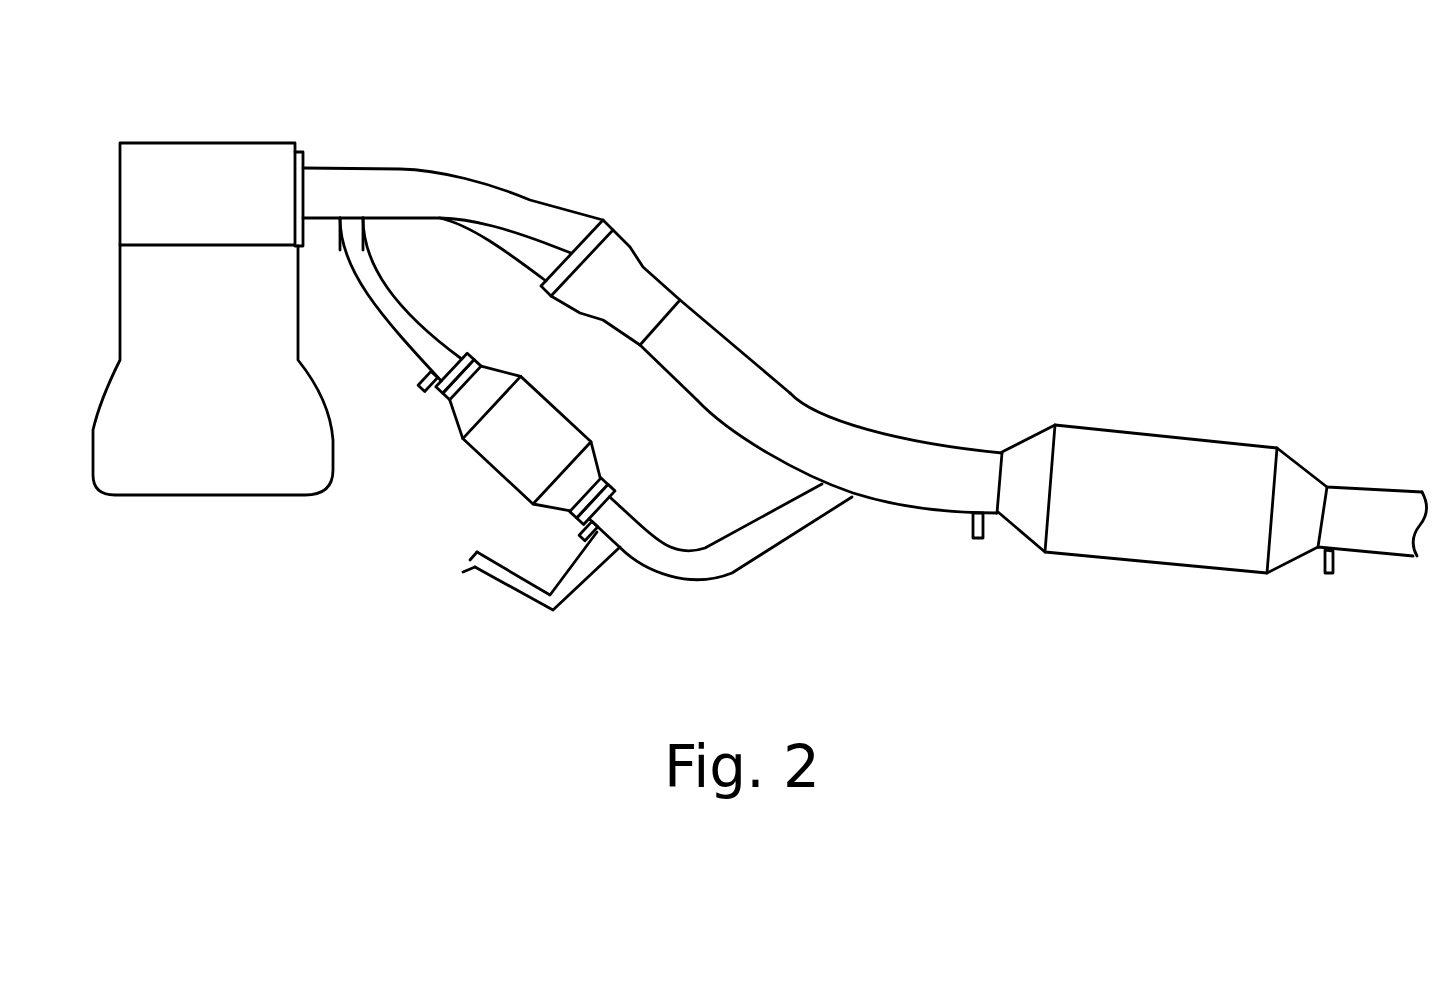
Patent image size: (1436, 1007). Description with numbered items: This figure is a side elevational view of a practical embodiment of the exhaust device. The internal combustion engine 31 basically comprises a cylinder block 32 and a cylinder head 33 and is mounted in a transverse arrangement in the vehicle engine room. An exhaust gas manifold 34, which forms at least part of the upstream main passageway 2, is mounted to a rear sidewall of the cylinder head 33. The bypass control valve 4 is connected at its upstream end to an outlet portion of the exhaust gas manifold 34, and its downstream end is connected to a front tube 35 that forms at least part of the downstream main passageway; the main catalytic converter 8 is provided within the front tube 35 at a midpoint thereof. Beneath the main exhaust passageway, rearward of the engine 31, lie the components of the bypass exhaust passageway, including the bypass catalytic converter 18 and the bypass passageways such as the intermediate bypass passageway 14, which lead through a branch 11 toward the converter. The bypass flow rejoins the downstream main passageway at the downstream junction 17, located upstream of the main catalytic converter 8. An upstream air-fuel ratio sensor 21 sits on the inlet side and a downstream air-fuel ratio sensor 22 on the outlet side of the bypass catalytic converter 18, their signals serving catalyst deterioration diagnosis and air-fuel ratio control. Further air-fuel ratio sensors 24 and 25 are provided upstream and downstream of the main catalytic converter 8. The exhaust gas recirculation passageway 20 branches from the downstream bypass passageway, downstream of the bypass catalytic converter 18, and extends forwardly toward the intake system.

The upstream main passageway 2 is at (427, 178).
The bypass control valve 4 is at (618, 251).
The main catalytic converter 8 is at (1152, 455).
The branch exhaust pipe 11 is at (358, 233).
The intermediate bypass passageway 14 is at (425, 335).
The downstream junction 17 is at (865, 480).
The bypass catalytic converter 18 is at (560, 428).
The exhaust gas recirculation passageway 20 is at (593, 587).
The upstream air-fuel ratio sensor 21 is at (418, 392).
The downstream air-fuel ratio sensor 22 is at (581, 536).
The air-fuel ratio sensor 24 is at (973, 540).
The air-fuel ratio sensor 25 is at (1331, 575).
The internal combustion engine 31 is at (235, 261).
The cylinder block 32 is at (300, 393).
The cylinder head 33 is at (178, 155).
The exhaust gas manifold 34 is at (652, 313).
The front tube 35 is at (707, 324).